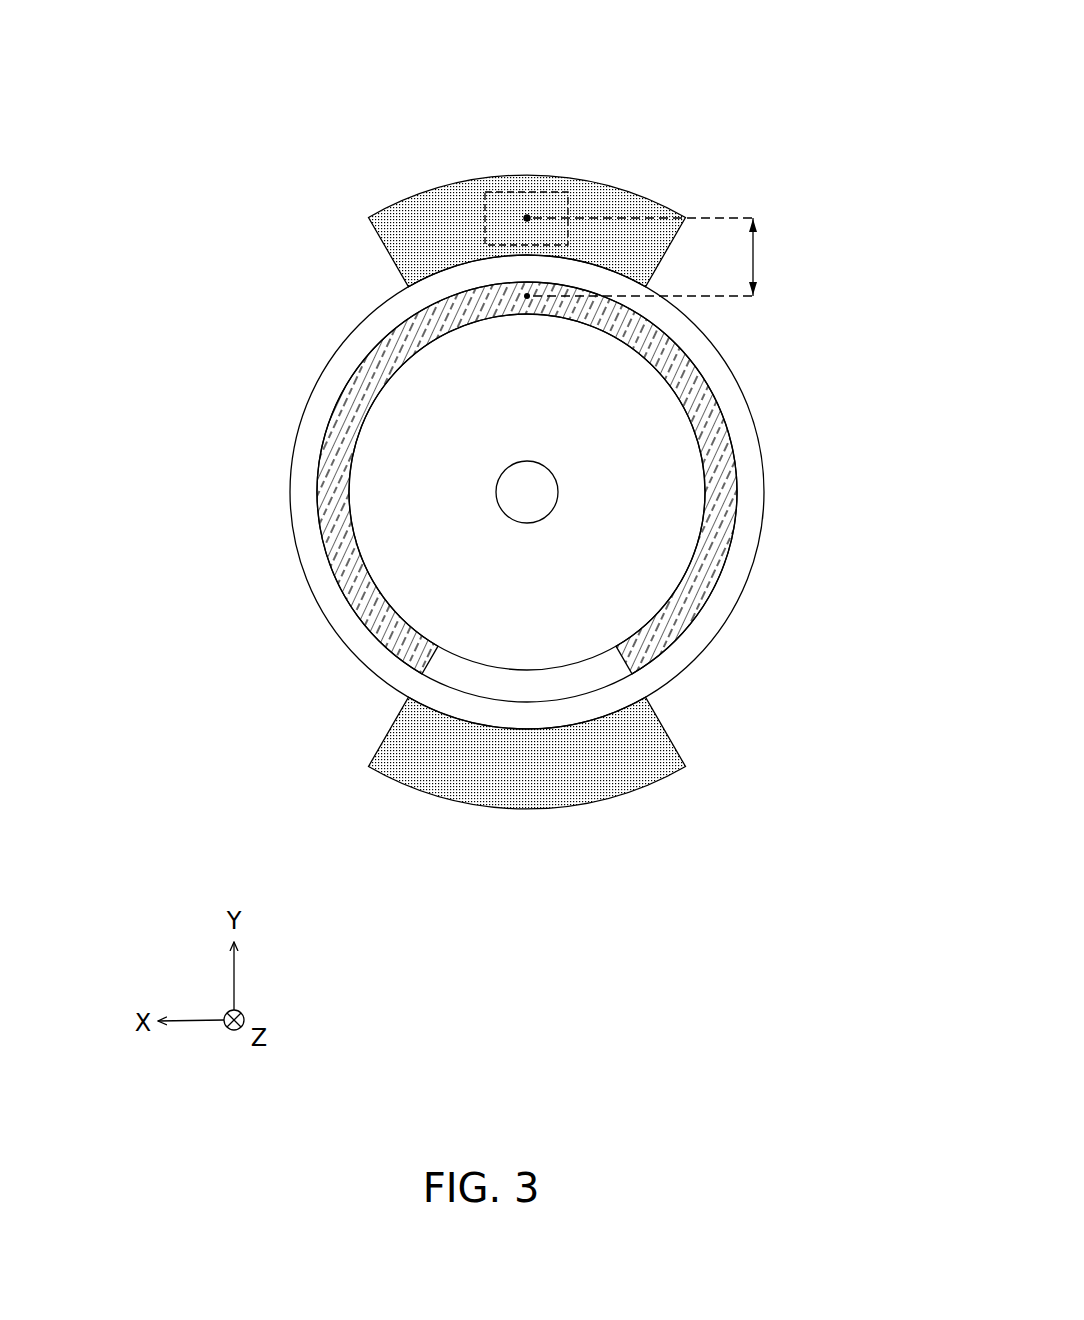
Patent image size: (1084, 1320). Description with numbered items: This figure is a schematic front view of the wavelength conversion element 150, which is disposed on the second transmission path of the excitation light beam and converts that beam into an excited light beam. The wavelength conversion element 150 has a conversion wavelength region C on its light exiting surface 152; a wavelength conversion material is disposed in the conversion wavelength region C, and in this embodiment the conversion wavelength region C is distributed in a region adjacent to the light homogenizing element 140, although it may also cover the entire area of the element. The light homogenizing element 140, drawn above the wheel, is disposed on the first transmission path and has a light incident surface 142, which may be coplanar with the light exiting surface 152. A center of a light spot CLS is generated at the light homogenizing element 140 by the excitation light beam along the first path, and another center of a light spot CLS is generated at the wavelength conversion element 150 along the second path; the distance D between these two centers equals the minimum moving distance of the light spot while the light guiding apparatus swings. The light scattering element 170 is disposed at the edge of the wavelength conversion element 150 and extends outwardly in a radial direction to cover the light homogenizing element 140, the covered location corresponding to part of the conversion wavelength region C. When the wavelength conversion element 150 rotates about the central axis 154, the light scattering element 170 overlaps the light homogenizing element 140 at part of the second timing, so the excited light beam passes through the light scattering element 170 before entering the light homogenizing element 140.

The light homogenizing element 140 is at (539, 192).
The light incident surface 142 is at (507, 215).
The wavelength conversion element 150 is at (292, 298).
The light exiting surface 152 is at (333, 500).
The central axis 154 is at (518, 523).
The light scattering element 170 is at (629, 203).
The conversion wavelength region C is at (737, 508).
The center of a light spot CLS is at (531, 218).
The distance D is at (659, 257).